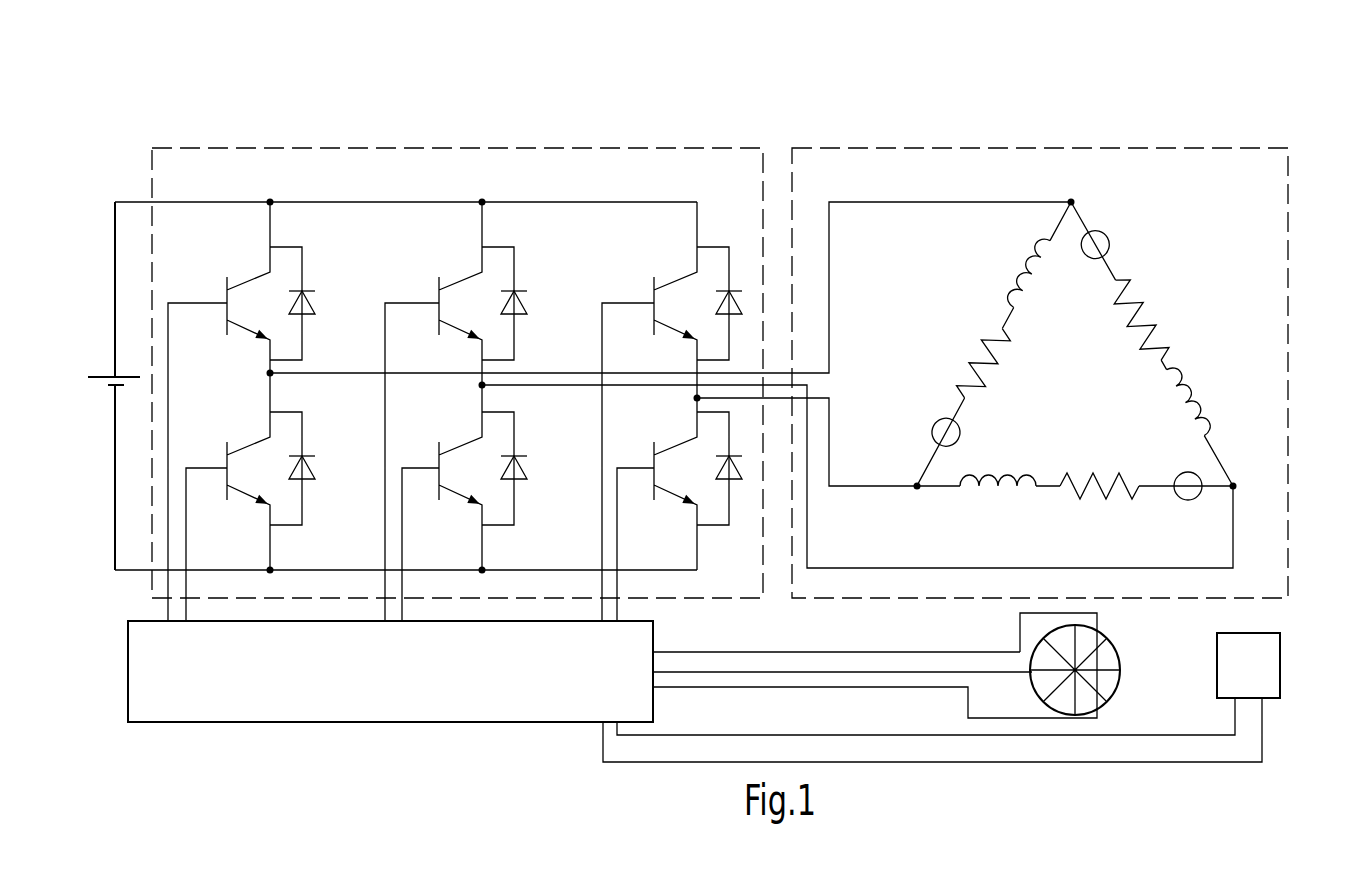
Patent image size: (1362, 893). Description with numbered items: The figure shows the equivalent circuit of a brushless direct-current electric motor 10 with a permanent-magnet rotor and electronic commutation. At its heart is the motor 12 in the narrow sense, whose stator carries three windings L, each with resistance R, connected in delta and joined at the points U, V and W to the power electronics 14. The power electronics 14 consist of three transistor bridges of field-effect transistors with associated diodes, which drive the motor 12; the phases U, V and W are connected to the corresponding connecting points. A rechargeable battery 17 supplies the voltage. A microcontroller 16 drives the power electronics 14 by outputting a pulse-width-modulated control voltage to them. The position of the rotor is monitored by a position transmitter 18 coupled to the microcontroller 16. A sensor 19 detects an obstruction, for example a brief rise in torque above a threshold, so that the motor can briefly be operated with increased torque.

The electric motor 10 is at (1095, 118).
The motor 12 is at (943, 167).
The power electronics 14 is at (575, 167).
The microcontroller 16 is at (486, 680).
The rechargeable battery 17 is at (100, 377).
The position transmitter 18 is at (1115, 652).
The sensor 19 is at (1258, 672).